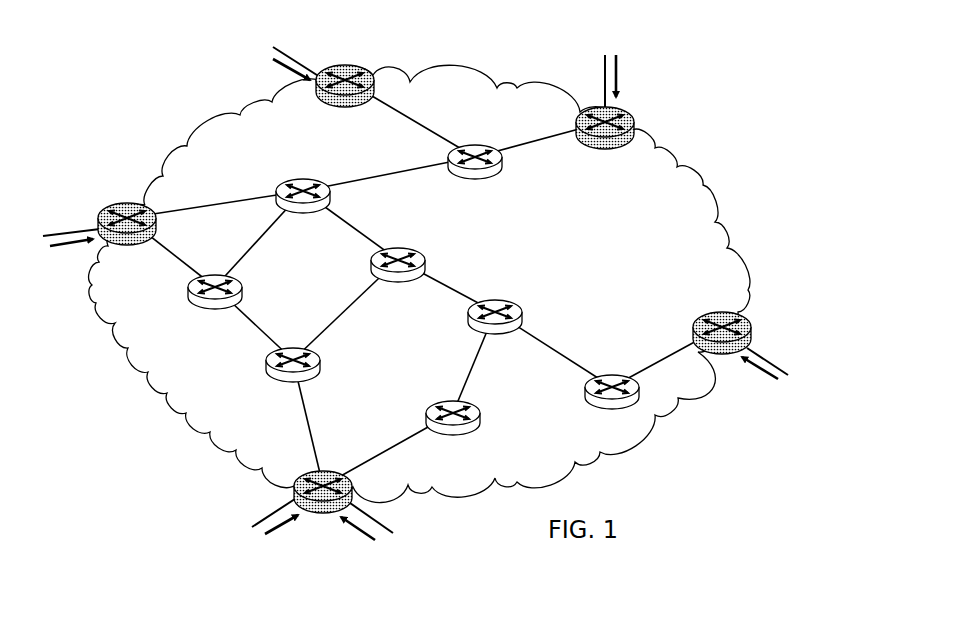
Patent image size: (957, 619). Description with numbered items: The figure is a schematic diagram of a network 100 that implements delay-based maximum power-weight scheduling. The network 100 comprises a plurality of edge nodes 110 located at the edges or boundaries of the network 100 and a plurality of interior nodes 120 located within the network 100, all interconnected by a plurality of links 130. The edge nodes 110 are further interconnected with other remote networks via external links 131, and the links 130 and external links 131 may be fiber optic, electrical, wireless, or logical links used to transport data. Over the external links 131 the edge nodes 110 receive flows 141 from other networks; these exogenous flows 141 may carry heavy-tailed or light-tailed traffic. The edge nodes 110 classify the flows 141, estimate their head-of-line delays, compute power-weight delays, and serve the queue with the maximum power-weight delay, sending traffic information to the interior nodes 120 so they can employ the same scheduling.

The network 100 is at (160, 95).
The edge node 110 is at (717, 311).
The interior node 120 is at (583, 393).
The link 130 is at (410, 122).
The external link 131 is at (777, 348).
The flow 141 is at (763, 377).